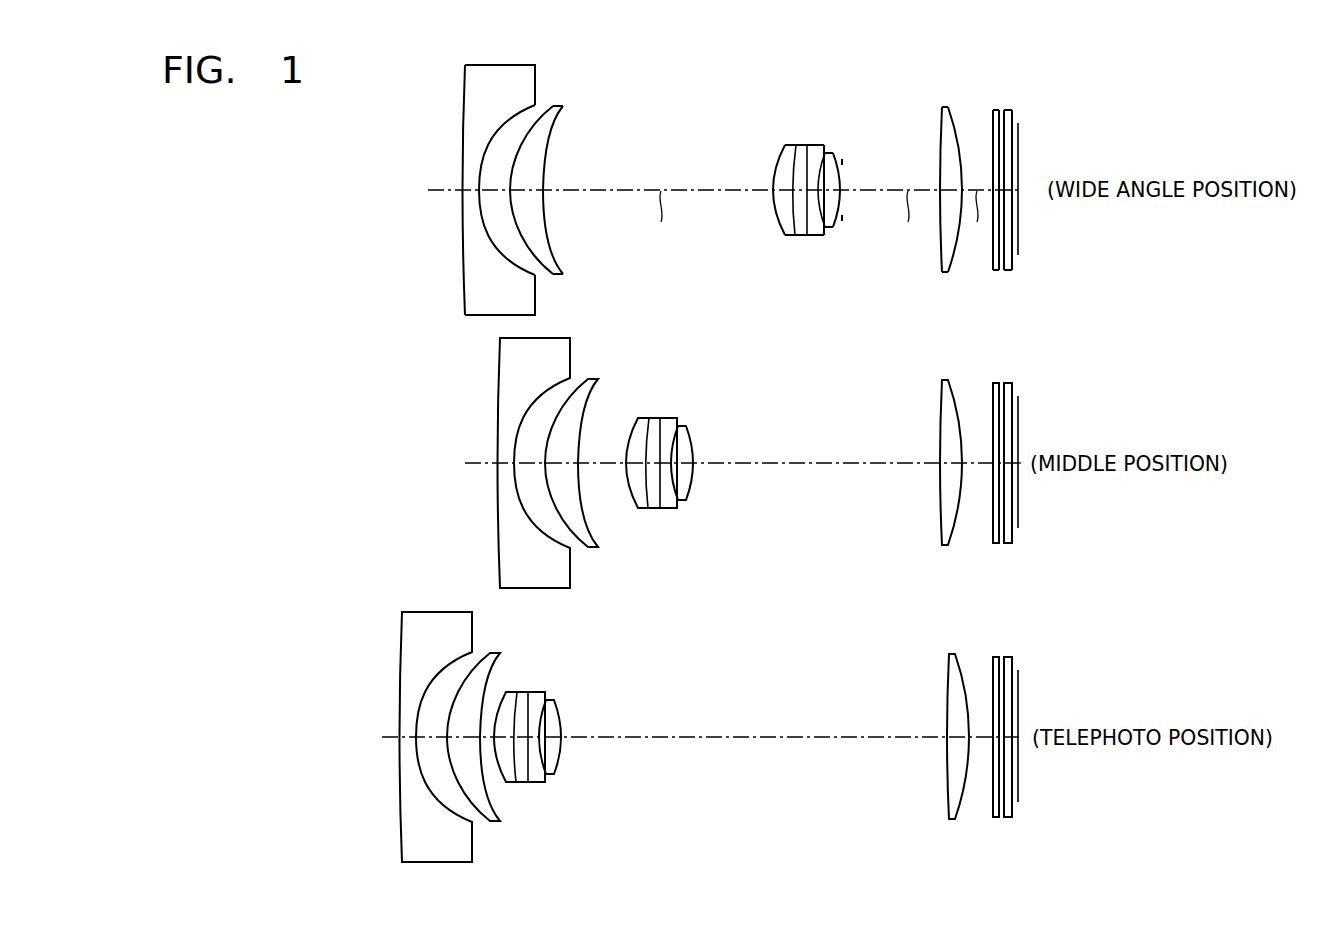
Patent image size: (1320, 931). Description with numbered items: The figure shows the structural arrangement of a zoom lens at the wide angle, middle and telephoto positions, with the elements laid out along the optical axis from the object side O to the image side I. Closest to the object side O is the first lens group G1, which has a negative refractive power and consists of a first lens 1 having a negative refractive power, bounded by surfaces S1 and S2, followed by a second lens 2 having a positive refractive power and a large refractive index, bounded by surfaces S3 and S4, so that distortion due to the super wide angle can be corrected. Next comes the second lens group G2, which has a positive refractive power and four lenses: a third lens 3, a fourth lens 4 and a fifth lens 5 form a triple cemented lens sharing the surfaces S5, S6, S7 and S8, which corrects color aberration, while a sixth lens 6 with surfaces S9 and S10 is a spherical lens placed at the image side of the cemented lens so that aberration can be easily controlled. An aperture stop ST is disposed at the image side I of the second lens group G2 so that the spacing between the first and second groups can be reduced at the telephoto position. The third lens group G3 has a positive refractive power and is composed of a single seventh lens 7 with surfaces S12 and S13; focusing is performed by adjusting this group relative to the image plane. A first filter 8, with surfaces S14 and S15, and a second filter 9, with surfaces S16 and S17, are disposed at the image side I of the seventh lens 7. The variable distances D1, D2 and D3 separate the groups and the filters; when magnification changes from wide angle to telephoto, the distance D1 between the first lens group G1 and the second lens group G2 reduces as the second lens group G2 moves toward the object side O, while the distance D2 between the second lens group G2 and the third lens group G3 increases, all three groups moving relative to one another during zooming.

The first lens 1 is at (475, 195).
The second lens 2 is at (558, 215).
The third lens 3 is at (762, 204).
The fourth lens 4 is at (796, 189).
The fifth lens 5 is at (825, 189).
The sixth lens 6 is at (858, 202).
The seventh lens 7 is at (928, 195).
The first filter 8 is at (994, 191).
The second filter 9 is at (1034, 204).
The first lens group G1 is at (462, 54).
The second lens group G2 is at (773, 54).
The third lens group G3 is at (923, 54).
The variable distance D1 is at (664, 220).
The variable distance D2 is at (911, 221).
The variable distance D3 is at (979, 221).
The object side O is at (713, 191).
The image side I is at (1031, 189).
The aperture stop ST is at (843, 220).
The lens surface S1 is at (462, 162).
The lens surface S2 is at (497, 140).
The lens surface S3 is at (525, 137).
The lens surface S4 is at (545, 163).
The lens surface S5 is at (775, 172).
The lens surface S6 is at (794, 162).
The lens surface S7 is at (805, 160).
The lens surface S8 is at (822, 157).
The lens surface S9 is at (827, 157).
The lens surface S10 is at (842, 181).
The lens surface S12 is at (938, 140).
The lens surface S13 is at (960, 117).
The filter surface S14 is at (992, 132).
The filter surface S15 is at (1002, 127).
The filter surface S16 is at (1007, 125).
The filter surface S17 is at (1017, 145).